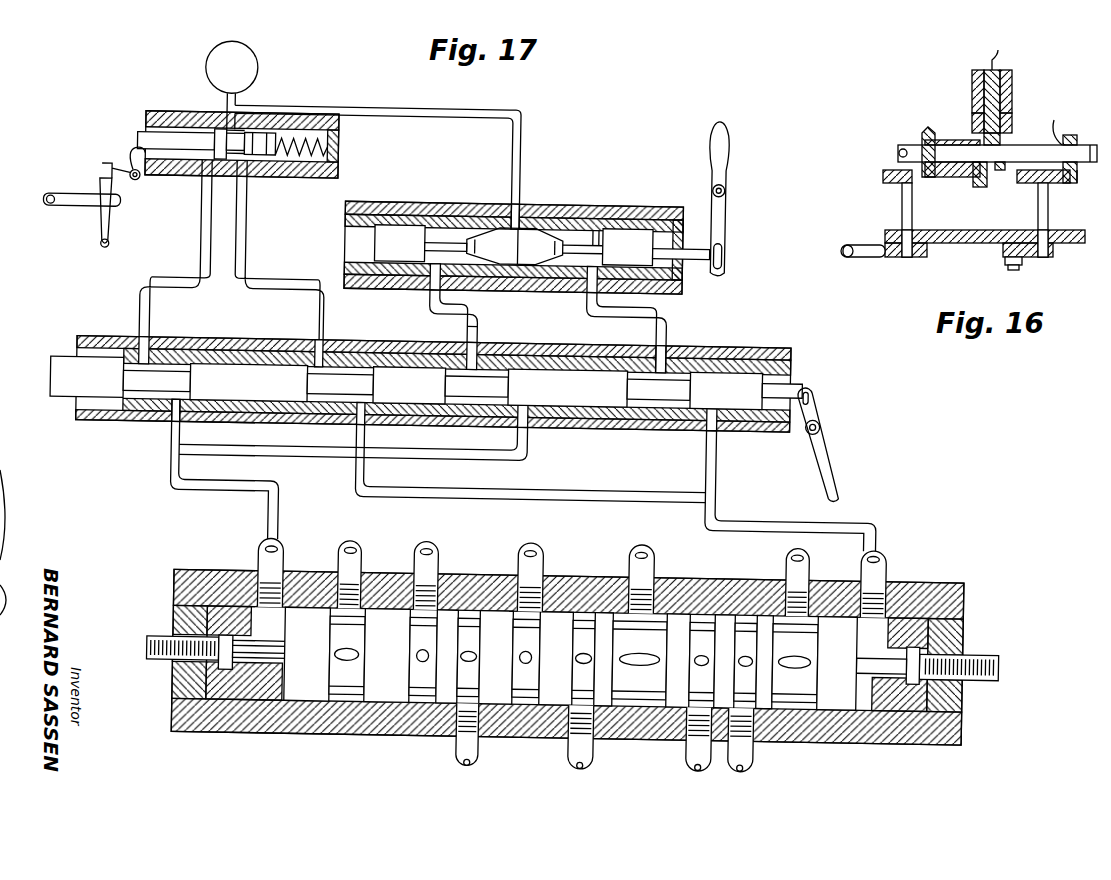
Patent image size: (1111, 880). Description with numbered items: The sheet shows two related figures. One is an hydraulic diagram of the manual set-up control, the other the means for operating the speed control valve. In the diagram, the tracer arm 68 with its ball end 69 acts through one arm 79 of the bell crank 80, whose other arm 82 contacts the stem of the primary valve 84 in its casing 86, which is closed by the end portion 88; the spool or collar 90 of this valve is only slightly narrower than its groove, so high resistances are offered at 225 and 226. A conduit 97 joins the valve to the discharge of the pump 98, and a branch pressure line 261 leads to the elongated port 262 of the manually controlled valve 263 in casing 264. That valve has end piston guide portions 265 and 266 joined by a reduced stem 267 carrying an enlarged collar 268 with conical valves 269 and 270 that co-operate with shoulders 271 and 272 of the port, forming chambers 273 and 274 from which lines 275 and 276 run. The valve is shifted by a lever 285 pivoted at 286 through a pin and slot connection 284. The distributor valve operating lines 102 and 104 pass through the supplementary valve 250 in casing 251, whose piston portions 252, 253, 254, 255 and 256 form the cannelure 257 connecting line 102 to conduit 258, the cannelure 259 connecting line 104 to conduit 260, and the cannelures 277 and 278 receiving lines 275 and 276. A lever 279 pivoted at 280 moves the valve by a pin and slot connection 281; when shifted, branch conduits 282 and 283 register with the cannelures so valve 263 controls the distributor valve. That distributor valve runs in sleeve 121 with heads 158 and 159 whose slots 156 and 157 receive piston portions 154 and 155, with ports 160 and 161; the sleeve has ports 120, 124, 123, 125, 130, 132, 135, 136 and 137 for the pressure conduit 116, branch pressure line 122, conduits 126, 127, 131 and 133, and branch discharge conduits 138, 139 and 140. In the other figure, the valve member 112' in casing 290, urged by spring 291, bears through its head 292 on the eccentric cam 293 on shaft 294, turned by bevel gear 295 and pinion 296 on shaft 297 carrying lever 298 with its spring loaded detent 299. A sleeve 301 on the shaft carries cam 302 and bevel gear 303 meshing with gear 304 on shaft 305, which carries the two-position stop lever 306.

In FIG. 17, the pump 98 is at (255, 62).
In FIG. 17, the primary valve 84 is at (160, 128).
In FIG. 17, the resistance 225 is at (214, 125).
In FIG. 17, the conduit 97 is at (234, 105).
In FIG. 17, the resistance 226 is at (260, 108).
In FIG. 17, the branch pressure line 261 is at (378, 102).
In FIG. 17, the casing 86 is at (335, 118).
In FIG. 17, the valve housing lower wall 88 is at (334, 156).
In FIG. 17, the spool portion 90 is at (240, 158).
In FIG. 17, the arm of bell crank 79 is at (124, 150).
In FIG. 17, the arm of bell crank 82 is at (113, 165).
In FIG. 17, the bell crank 80 is at (135, 177).
In FIG. 17, the tracer arm 68 is at (106, 207).
In FIG. 17, the ball end 69 is at (104, 240).
In FIG. 17, the distributor valve operating line 102 is at (198, 262).
In FIG. 17, the distributor valve operating line 104 is at (243, 240).
In FIG. 17, the elongated port 262 is at (540, 202).
In FIG. 17, the casing 264 is at (352, 200).
In FIG. 17, the end piston guide portion 265 is at (397, 218).
In FIG. 17, the reduced stem portion 267 is at (450, 235).
In FIG. 17, the enlarged collar 268 is at (515, 262).
In FIG. 17, the conical valve 269 is at (550, 258).
In FIG. 17, the conical valve 270 is at (480, 258).
In FIG. 17, the shoulder 271 is at (580, 238).
In FIG. 17, the shoulder 272 is at (512, 196).
In FIG. 17, the port 274 is at (598, 222).
In FIG. 17, the manually controlled valve 263 is at (650, 232).
In FIG. 17, the end piston guide portion 266 is at (648, 272).
In FIG. 17, the pin and slot connection 284 is at (722, 240).
In FIG. 17, the lever 285 is at (724, 160).
In FIG. 17, the pivot 286 is at (722, 180).
In FIG. 17, the chamber 273 is at (422, 270).
In FIG. 17, the conduit 275 is at (476, 322).
In FIG. 17, the conduit 276 is at (665, 308).
In FIG. 17, the cannelure 278 is at (672, 348).
In FIG. 17, the supplementary valve 250 is at (122, 336).
In FIG. 17, the piston portion 252 is at (100, 398).
In FIG. 17, the valve casing 251 is at (220, 410).
In FIG. 17, the cannelure 257 is at (165, 405).
In FIG. 17, the piston portion 253 is at (262, 372).
In FIG. 17, the cannelure 259 is at (330, 405).
In FIG. 17, the piston portion 254 is at (405, 400).
In FIG. 17, the cannelure 277 is at (495, 400).
In FIG. 17, the piston portion 255 is at (580, 410).
In FIG. 17, the piston portion 256 is at (730, 400).
In FIG. 17, the lever 279 is at (838, 445).
In FIG. 17, the pivot 280 is at (821, 414).
In FIG. 17, the pin and slot connection 281 is at (812, 387).
In FIG. 17, the conduit 258 is at (186, 472).
In FIG. 17, the branch conduit 282 is at (530, 445).
In FIG. 17, the conduit 260 is at (438, 467).
In FIG. 17, the branch conduit 283 is at (717, 470).
In FIG. 17, the head 158 is at (180, 590).
In FIG. 17, the head 159 is at (968, 582).
In FIG. 17, the elongated slot 156 is at (245, 660).
In FIG. 17, the piston portion 154 is at (258, 660).
In FIG. 17, the port 135 is at (348, 690).
In FIG. 17, the elongated slot 157 is at (898, 665).
In FIG. 17, the piston portion 155 is at (880, 665).
In FIG. 17, the valve sleeve 121 is at (312, 700).
In FIG. 17, the port 120 is at (412, 700).
In FIG. 17, the port 124 is at (478, 600).
In FIG. 17, the port 136 is at (530, 700).
In FIG. 17, the port 125 is at (590, 600).
In FIG. 17, the port 123 is at (655, 612).
In FIG. 17, the port 130 is at (705, 605).
In FIG. 17, the port 137 is at (808, 700).
In FIG. 17, the port 132 is at (740, 612).
In FIG. 17, the conduit 133 is at (762, 750).
In FIG. 17, the port 160 is at (262, 600).
In FIG. 17, the branch discharge conduit 138 is at (356, 545).
In FIG. 17, the conduit 116 is at (430, 545).
In FIG. 17, the branch discharge conduit 139 is at (536, 548).
In FIG. 17, the branch pressure line 122 is at (652, 545).
In FIG. 17, the branch discharge conduit 140 is at (789, 553).
In FIG. 17, the port 161 is at (892, 600).
In FIG. 17, the conduit 126 is at (486, 748).
In FIG. 17, the conduit 127 is at (600, 752).
In FIG. 17, the conduit 131 is at (692, 750).
In FIG. 16, the eccentric cam 293 is at (1008, 150).
In FIG. 16, the valve casing 290 is at (1010, 72).
In FIG. 16, the valve member 112' is at (1005, 56).
In FIG. 16, the head 292 is at (1012, 122).
In FIG. 16, the spring 291 is at (1069, 123).
In FIG. 16, the cam 302 is at (980, 187).
In FIG. 16, the sleeve 301 is at (958, 140).
In FIG. 16, the bevel gear 303 is at (920, 133).
In FIG. 16, the bevel gear 304 is at (883, 172).
In FIG. 16, the shaft 305 is at (902, 193).
In FIG. 16, the pinion 296 is at (1030, 183).
In FIG. 16, the shaft 297 is at (1038, 205).
In FIG. 16, the shaft 294 is at (1077, 140).
In FIG. 16, the bevel gear 295 is at (1077, 184).
In FIG. 16, the lever 298 is at (1030, 258).
In FIG. 16, the lever 306 is at (880, 258).
In FIG. 16, the spring loaded detent 299 is at (1010, 270).